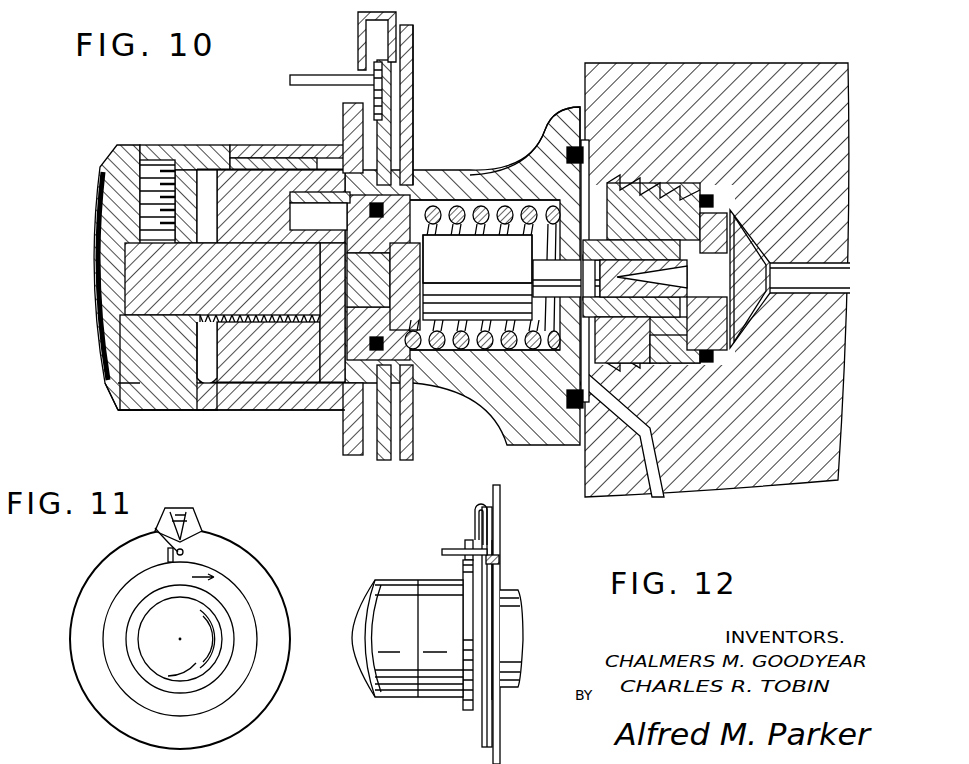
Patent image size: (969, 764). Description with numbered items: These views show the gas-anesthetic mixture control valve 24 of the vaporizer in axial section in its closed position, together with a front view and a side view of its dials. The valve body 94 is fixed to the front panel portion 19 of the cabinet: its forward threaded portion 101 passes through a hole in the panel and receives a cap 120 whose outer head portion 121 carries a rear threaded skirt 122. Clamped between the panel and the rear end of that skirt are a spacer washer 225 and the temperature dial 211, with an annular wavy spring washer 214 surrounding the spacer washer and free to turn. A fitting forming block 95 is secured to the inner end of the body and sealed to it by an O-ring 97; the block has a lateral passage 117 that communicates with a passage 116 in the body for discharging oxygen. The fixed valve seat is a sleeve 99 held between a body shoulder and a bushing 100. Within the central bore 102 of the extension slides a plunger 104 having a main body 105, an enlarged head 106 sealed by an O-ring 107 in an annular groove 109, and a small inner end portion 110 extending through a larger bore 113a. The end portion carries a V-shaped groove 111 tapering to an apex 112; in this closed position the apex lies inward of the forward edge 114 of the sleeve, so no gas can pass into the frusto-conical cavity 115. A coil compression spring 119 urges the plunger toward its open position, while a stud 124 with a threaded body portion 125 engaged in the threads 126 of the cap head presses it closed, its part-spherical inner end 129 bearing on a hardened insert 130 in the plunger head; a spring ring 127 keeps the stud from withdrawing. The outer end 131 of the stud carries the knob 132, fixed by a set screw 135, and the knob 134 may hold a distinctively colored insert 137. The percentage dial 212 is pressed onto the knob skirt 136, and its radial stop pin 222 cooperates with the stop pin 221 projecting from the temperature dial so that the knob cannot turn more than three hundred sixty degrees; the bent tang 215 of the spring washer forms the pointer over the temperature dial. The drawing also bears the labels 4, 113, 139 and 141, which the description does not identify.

In FIG. 10, the gas supply conduit 4 is at (848, 263).
In FIG. 10, the front panel portion 19 is at (413, 60).
In FIG. 12, the front panel portion 19 is at (500, 520).
In FIG. 10, the gas-anesthetic mixture control valve 24 is at (462, 70).
In FIG. 10, the valve body 94 is at (497, 150).
In FIG. 12, the valve body 94 is at (512, 623).
In FIG. 10, the fitting forming block 95 is at (710, 78).
In FIG. 10, the O-ring 97 is at (704, 196).
In FIG. 10, the sleeve 99 is at (652, 345).
In FIG. 10, the bushing 100 is at (722, 332).
In FIG. 10, the threaded portion 101 is at (405, 200).
In FIG. 10, the central bore 102 is at (428, 352).
In FIG. 10, the plunger 104 is at (450, 235).
In FIG. 10, the main body 105 is at (490, 348).
In FIG. 10, the enlarged head 106 is at (355, 200).
In FIG. 10, the O-ring 107 is at (423, 243).
In FIG. 10, the annular groove 109 is at (366, 345).
In FIG. 10, the inner end portion 110 is at (600, 240).
In FIG. 10, the V-shaped groove 111 is at (660, 278).
In FIG. 10, the apex 112 is at (625, 255).
In FIG. 10, the washer 113 is at (587, 160).
In FIG. 10, the bore 113a is at (585, 263).
In FIG. 10, the forward edge 114 is at (600, 322).
In FIG. 10, the frusto-conical cavity 115 is at (566, 278).
In FIG. 10, the passage 116 is at (570, 398).
In FIG. 10, the passage 117 is at (622, 448).
In FIG. 10, the coil compression spring 119 is at (462, 352).
In FIG. 10, the cap 120 is at (272, 410).
In FIG. 10, the outer head portion 121 is at (243, 230).
In FIG. 10, the skirt 122 is at (348, 412).
In FIG. 10, the stud 124 is at (227, 225).
In FIG. 10, the threaded body portion 125 is at (196, 388).
In FIG. 10, the threads 126 is at (266, 222).
In FIG. 10, the spring ring 127 is at (352, 316).
In FIG. 10, the inner end 129 is at (350, 275).
In FIG. 10, the hardened insert 130 is at (415, 262).
In FIG. 10, the outer end 131 is at (137, 267).
In FIG. 10, the knob 132 is at (176, 422).
In FIG. 11, the knob 132 is at (133, 653).
In FIG. 10, the knob 134 is at (150, 383).
In FIG. 10, the set screw 135 is at (150, 187).
In FIG. 10, the skirt 136 is at (248, 417).
In FIG. 10, the colored insert 137 is at (97, 280).
In FIG. 11, the colored insert 137 is at (165, 668).
In FIG. 12, the colored insert 137 is at (357, 657).
In FIG. 10, the slot 139 is at (203, 383).
In FIG. 10, the knob wall 141 is at (163, 323).
In FIG. 10, the temperature dial 211 is at (400, 460).
In FIG. 11, the temperature dial 211 is at (244, 563).
In FIG. 12, the temperature dial 211 is at (480, 730).
In FIG. 10, the dial 212 is at (380, 458).
In FIG. 11, the dial 212 is at (120, 610).
In FIG. 12, the dial 212 is at (460, 703).
In FIG. 12, the spring washer 214 is at (492, 545).
In FIG. 10, the tang 215 is at (358, 28).
In FIG. 11, the tang 215 is at (197, 518).
In FIG. 12, the tang 215 is at (482, 504).
In FIG. 10, the stop pin 221 is at (290, 78).
In FIG. 11, the stop pin 221 is at (157, 530).
In FIG. 12, the stop pin 221 is at (442, 552).
In FIG. 11, the stop pin 222 is at (166, 553).
In FIG. 12, the stop pin 222 is at (466, 548).
In FIG. 10, the spacer washer 225 is at (385, 204).
In FIG. 12, the spacer washer 225 is at (499, 560).